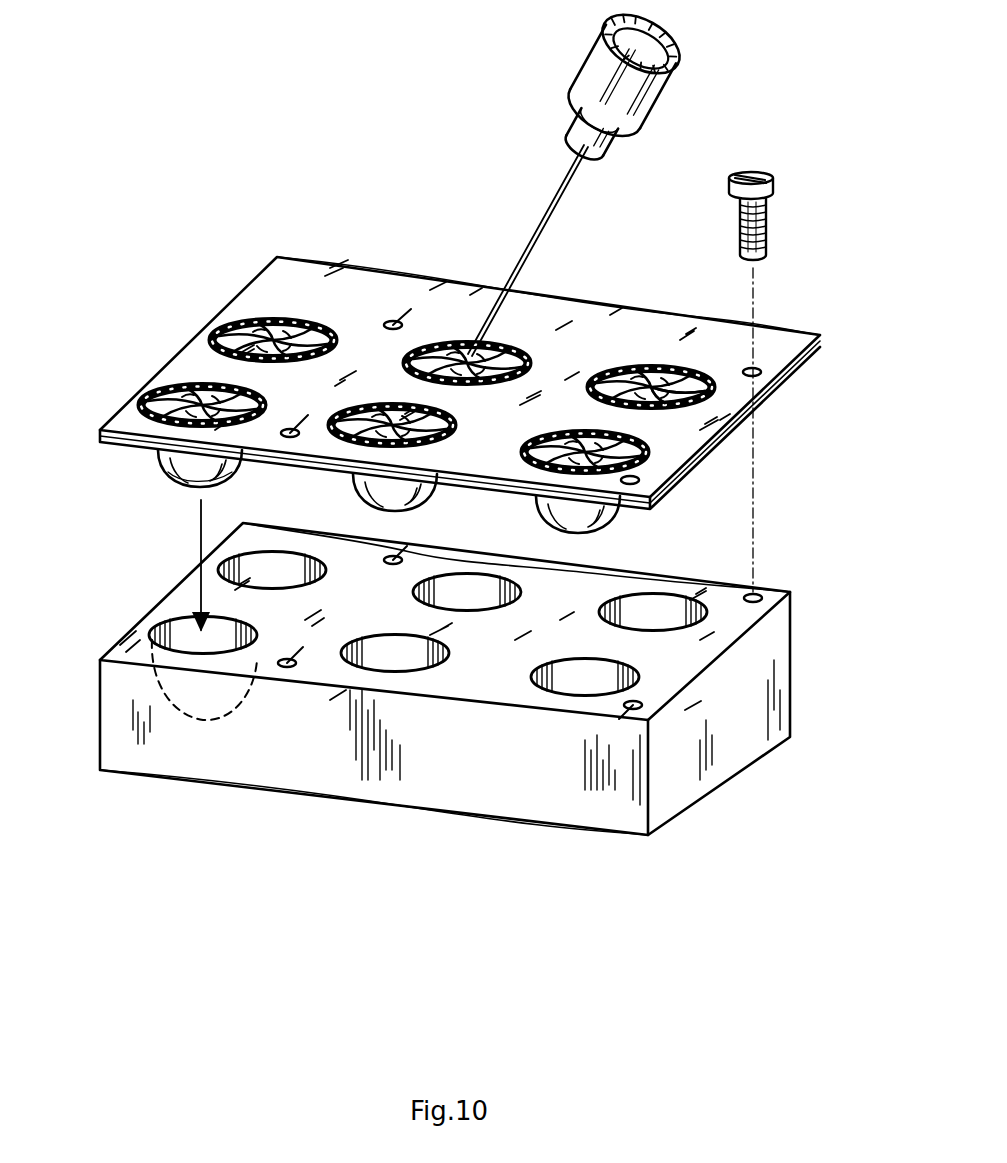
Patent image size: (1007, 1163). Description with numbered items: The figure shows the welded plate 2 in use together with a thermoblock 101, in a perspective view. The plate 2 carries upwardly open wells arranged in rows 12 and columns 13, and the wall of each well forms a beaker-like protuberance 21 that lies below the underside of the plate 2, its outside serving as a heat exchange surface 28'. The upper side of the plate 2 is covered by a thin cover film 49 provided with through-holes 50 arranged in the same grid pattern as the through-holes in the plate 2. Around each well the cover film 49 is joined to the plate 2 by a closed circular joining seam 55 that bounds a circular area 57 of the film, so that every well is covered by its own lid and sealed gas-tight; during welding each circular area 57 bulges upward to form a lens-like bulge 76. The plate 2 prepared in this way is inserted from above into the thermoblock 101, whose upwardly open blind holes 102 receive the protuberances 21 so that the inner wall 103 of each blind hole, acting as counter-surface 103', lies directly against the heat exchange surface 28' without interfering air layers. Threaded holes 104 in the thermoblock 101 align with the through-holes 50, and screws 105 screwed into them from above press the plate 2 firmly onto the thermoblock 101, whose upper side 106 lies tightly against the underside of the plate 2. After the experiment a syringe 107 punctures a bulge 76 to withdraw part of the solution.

The plate 2 is at (737, 423).
The rows 12 is at (197, 326).
The columns 13 is at (375, 252).
The beaker-like protuberance 21 is at (160, 453).
The heat exchange surface 28' is at (131, 551).
The cover film 49 is at (775, 343).
The through-holes 50 is at (787, 368).
The joining seam 55 is at (667, 363).
The circular area 57 is at (647, 363).
The lens-like bulge 76 is at (263, 312).
The thermoblock 101 is at (460, 791).
The blind holes 102 is at (237, 660).
The inner wall 103 is at (172, 759).
The counter-surface 103' is at (136, 621).
The threaded holes 104 is at (287, 667).
The screws 105 is at (767, 218).
The upper side 106 is at (687, 648).
The syringe 107 is at (667, 98).